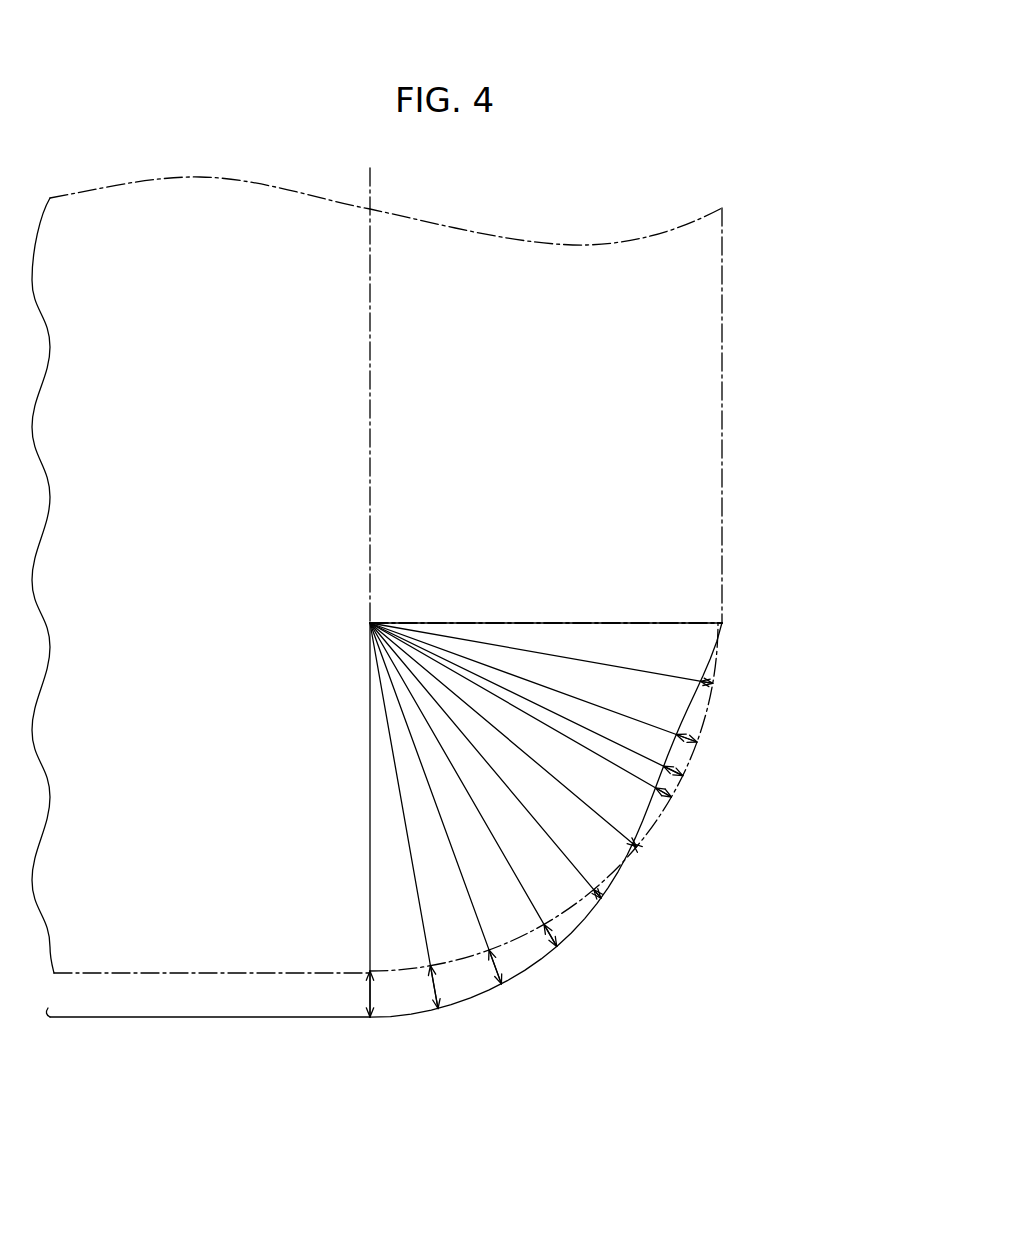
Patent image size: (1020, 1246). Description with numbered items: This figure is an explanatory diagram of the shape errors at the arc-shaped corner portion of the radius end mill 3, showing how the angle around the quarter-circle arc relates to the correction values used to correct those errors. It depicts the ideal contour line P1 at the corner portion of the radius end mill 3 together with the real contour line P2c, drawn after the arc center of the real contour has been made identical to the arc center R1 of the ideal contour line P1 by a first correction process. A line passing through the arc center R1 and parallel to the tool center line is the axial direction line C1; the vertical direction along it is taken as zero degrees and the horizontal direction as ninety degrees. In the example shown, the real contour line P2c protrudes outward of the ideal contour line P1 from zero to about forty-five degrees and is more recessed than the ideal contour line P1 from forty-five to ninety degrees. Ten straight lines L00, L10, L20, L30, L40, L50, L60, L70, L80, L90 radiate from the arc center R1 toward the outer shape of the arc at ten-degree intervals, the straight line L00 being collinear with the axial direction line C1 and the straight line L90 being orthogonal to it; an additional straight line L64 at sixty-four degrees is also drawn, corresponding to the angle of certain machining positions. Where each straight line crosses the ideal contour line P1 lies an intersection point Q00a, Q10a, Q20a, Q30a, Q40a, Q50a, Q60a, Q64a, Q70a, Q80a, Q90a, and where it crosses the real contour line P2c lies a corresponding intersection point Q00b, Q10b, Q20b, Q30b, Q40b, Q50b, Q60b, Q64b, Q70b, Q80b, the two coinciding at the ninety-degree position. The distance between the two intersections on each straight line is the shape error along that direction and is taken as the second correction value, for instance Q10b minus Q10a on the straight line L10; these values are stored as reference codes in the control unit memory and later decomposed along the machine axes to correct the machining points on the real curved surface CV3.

The radius end mill 3 is at (690, 325).
The axial direction line C1 is at (372, 400).
The arc center R1 is at (372, 618).
The ideal contour line P1 is at (178, 971).
The real contour line P2c is at (220, 1018).
The curved surface profile CV3 is at (565, 952).
The straight line L00 is at (370, 795).
The straight line L10 is at (392, 750).
The straight line L20 is at (405, 725).
The straight line L30 is at (490, 832).
The straight line L40 is at (422, 688).
The straight line L50 is at (506, 736).
The straight line L60 is at (537, 720).
The radial line 64 degrees L64 is at (586, 727).
The straight line L70 is at (610, 709).
The straight line L80 is at (652, 672).
The straight line L90 is at (695, 622).
The intersection point Q00a is at (369, 971).
The intersection point Q00b is at (371, 1018).
The intersection point Q10a is at (430, 966).
The intersection point Q10b is at (439, 1010).
The intersection point Q20a is at (489, 950).
The intersection point Q20b is at (502, 985).
The intersection point Q30a is at (545, 926).
The intersection point Q30b is at (558, 950).
The intersection point Q40a is at (592, 890).
The intersection point Q40b is at (603, 905).
The intersection point Q50a is at (638, 848).
The intersection point Q50b is at (633, 844).
The intersection point Q60a is at (672, 798).
The intersection point Q60b is at (656, 789).
The reference point on arc at 64 degrees Q64a is at (684, 777).
The point on curve at 64 degrees Q64b is at (664, 767).
The intersection point Q70a is at (698, 743).
The intersection point Q70b is at (678, 735).
The intersection point Q80a is at (714, 685).
The intersection point Q80b is at (703, 679).
The intersection point Q90a is at (723, 623).